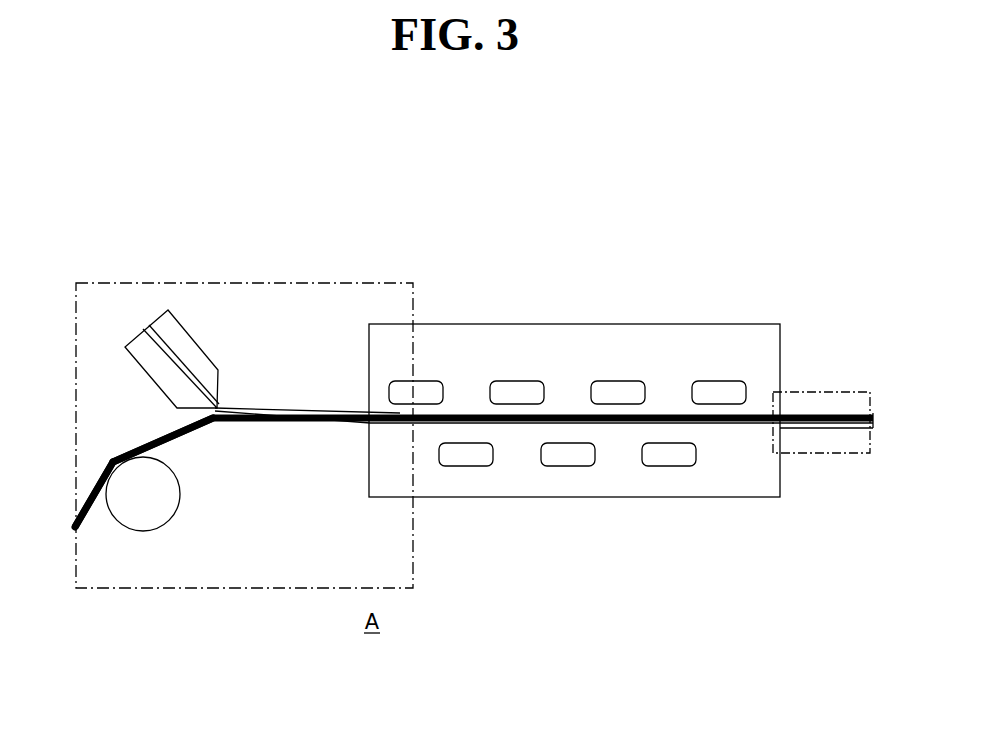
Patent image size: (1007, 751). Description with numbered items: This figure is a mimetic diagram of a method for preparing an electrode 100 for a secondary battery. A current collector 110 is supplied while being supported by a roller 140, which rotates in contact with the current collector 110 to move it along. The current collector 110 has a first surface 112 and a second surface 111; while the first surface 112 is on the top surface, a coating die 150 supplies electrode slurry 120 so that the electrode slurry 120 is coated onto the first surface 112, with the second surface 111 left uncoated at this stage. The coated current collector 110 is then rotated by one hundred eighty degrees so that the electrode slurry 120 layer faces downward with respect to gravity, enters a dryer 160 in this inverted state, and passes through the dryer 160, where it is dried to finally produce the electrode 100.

The electrode 100 is at (823, 462).
The current collector 110 is at (257, 434).
The second surface 111 is at (185, 437).
The first surface 112 is at (122, 455).
The electrode slurry 120 is at (235, 402).
The roller 140 is at (140, 518).
The coating die 150 is at (141, 345).
The dryer 160 is at (650, 512).